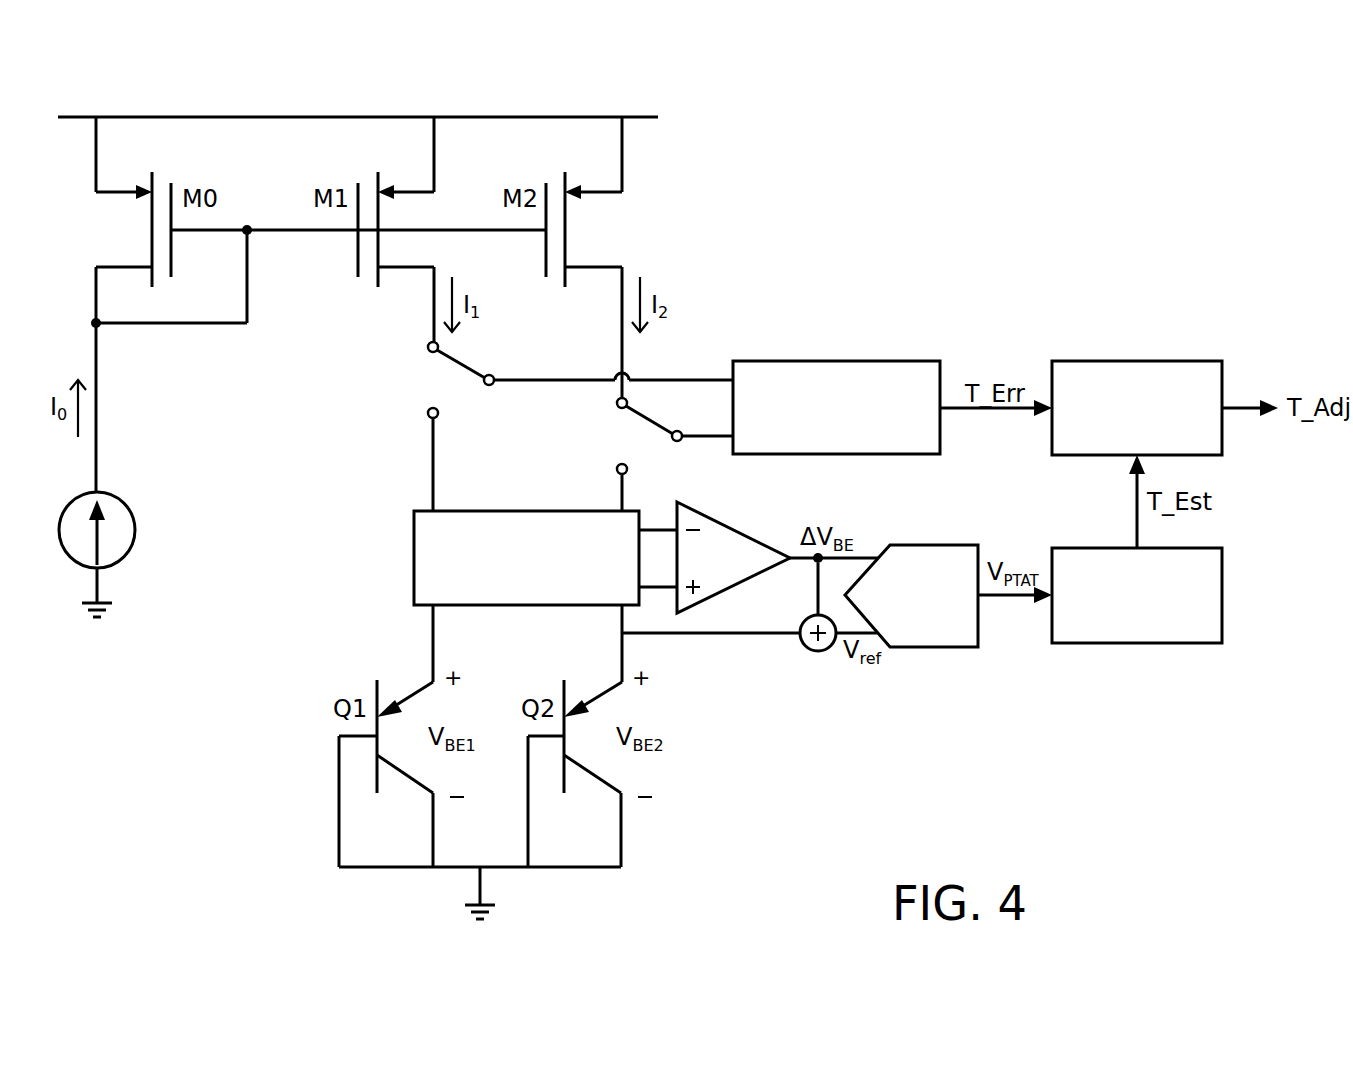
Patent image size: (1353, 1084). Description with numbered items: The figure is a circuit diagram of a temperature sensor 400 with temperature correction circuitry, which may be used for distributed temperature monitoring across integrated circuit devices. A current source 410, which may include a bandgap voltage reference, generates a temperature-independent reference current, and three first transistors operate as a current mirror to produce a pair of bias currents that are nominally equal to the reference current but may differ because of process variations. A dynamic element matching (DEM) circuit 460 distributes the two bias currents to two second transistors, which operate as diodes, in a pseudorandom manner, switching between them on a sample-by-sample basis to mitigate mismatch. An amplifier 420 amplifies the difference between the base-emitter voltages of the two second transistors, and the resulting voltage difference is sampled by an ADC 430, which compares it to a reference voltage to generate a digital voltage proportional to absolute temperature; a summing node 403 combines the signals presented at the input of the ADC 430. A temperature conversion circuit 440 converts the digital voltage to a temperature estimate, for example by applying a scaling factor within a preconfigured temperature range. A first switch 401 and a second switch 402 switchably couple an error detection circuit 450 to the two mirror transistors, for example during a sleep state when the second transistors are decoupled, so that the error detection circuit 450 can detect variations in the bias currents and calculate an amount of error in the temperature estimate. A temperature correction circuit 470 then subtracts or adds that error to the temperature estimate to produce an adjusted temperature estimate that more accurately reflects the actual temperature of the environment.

The temperature sensor 400 is at (1208, 138).
The switch 401 is at (453, 360).
The switch 402 is at (640, 416).
The summing node 403 is at (803, 650).
The current source 410 is at (125, 495).
The amplifier 420 is at (706, 572).
The ADC 430 is at (905, 622).
The temperature conversion circuit 440 is at (1115, 623).
The error detection circuit 450 is at (815, 435).
The dynamic element matching (DEM) circuit 460 is at (505, 585).
The temperature correction circuit 470 is at (1115, 435).